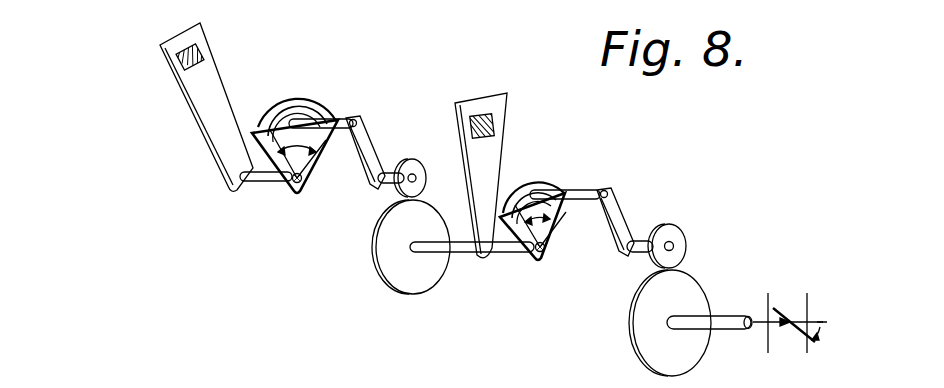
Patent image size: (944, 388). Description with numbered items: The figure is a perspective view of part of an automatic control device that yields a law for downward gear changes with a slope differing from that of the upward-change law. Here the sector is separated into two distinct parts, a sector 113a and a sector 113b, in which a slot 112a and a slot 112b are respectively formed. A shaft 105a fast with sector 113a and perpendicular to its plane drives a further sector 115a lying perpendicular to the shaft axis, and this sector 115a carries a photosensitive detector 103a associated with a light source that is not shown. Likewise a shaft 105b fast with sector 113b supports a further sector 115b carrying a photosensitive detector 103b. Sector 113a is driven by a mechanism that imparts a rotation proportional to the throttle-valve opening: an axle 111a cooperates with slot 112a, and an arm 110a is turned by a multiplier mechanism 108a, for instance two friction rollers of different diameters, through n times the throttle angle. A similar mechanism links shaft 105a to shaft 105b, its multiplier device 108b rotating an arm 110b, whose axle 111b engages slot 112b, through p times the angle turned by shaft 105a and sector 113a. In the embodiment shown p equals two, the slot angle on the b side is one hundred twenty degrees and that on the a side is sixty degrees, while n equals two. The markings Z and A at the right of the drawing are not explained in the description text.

The photosensitive detector 103b is at (201, 57).
The sector 115b is at (194, 108).
The slot 112b is at (275, 134).
The axle 111b is at (327, 117).
The arm 110b is at (367, 140).
The shaft 105b is at (240, 181).
The sector 113b is at (284, 181).
The multiplier device 108b is at (365, 244).
The shaft 105a is at (450, 245).
The photosensitive detector 103a is at (482, 112).
The sector 115a is at (503, 151).
The slot 112a is at (514, 213).
The axle 111a is at (582, 192).
The arm 110a is at (617, 204).
The multiplier mechanism 108a is at (722, 283).
The sector 113a is at (528, 251).
The axis of rotation Z is at (787, 321).
The angle of inclination A is at (814, 346).